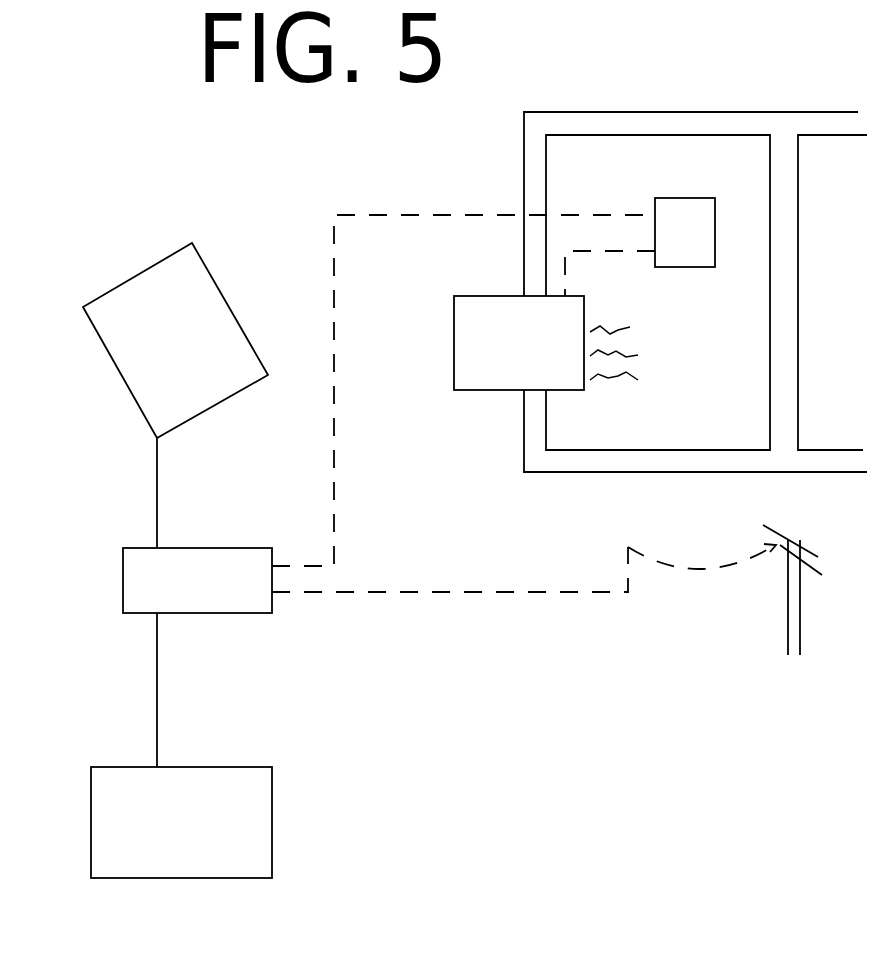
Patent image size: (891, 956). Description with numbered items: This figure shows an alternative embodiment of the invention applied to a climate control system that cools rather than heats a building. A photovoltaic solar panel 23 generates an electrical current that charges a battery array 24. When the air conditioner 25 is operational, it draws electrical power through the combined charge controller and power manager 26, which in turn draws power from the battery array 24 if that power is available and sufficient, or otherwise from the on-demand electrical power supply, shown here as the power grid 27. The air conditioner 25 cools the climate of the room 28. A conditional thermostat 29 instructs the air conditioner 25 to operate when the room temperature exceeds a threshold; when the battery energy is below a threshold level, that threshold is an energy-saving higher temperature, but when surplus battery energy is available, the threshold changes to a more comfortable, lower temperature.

The photovoltaic solar panel 23 is at (175, 395).
The battery array 24 is at (181, 822).
The air conditioner 25 is at (546, 343).
The combined charge controller and power manager 26 is at (449, 491).
The power grid 27 is at (776, 590).
The room 28 is at (695, 292).
The conditional thermostat 29 is at (640, 247).